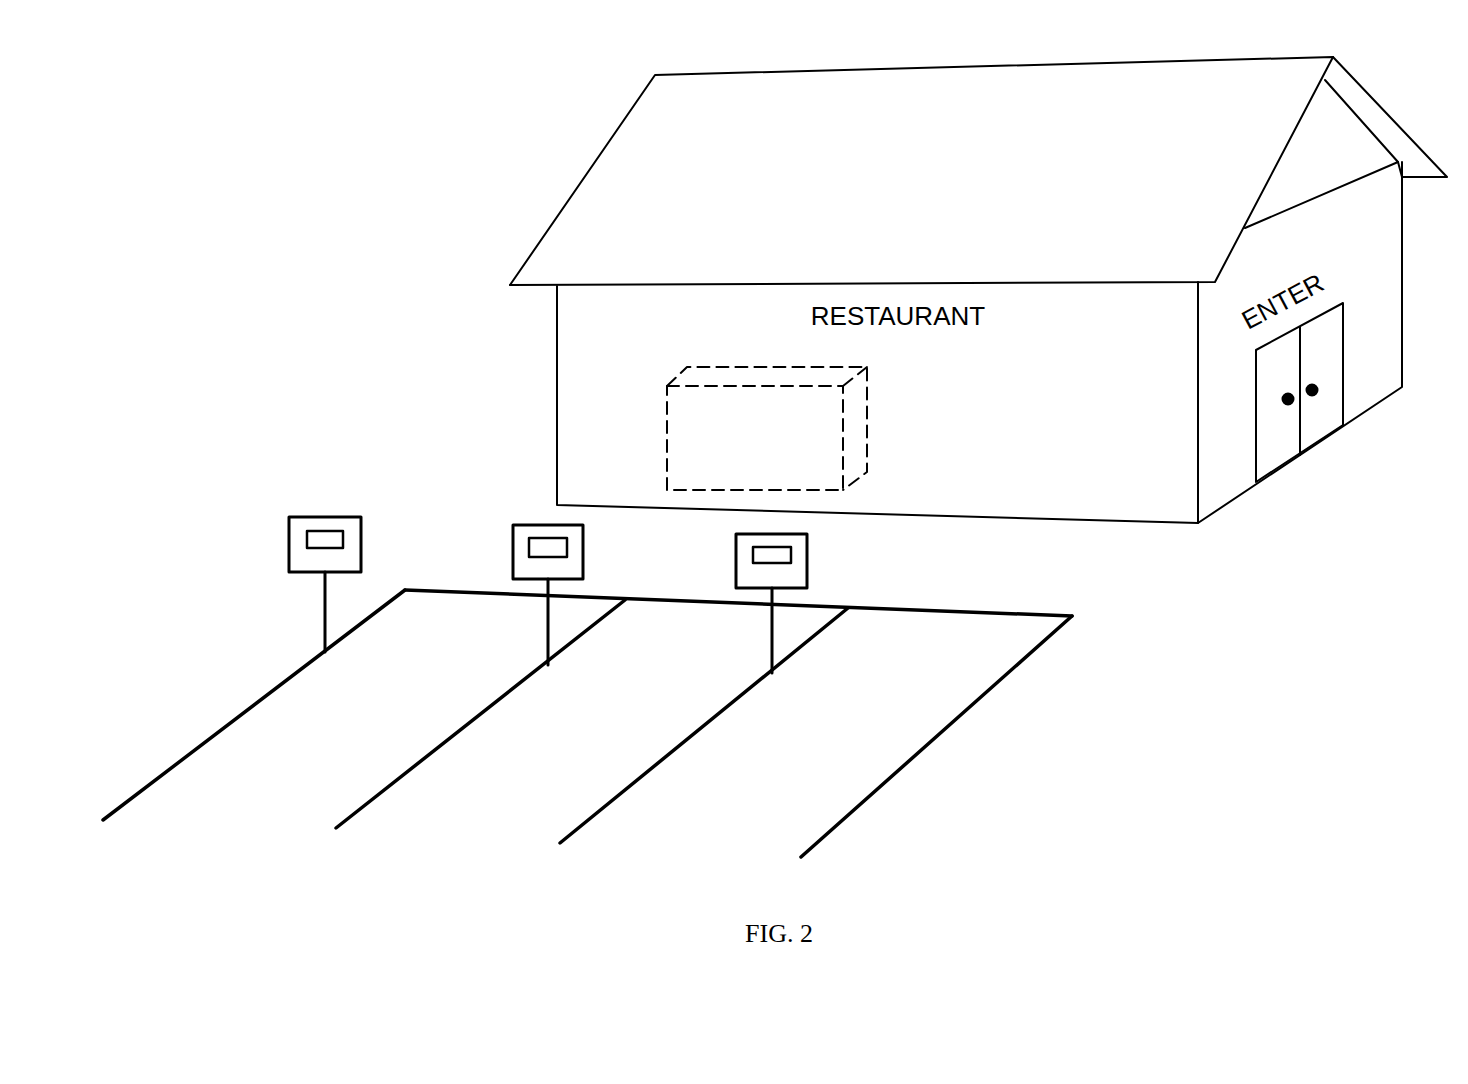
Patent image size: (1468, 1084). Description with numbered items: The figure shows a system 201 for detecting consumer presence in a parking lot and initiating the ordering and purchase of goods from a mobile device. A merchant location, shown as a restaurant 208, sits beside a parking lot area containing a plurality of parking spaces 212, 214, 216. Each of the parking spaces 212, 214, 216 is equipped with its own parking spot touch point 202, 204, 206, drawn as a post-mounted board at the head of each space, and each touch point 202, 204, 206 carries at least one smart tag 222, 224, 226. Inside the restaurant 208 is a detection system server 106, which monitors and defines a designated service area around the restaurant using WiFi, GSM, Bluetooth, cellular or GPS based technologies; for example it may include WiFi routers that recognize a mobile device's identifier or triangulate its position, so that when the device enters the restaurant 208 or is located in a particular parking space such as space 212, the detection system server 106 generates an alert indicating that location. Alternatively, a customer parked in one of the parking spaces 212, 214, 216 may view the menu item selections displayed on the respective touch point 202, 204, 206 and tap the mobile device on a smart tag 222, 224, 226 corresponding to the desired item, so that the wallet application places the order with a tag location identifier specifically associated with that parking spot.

The parking lot detection system environment 201 is at (318, 395).
The detection system server 106 is at (665, 437).
The parking spot touch point 202 is at (285, 563).
The parking spot touch point 204 is at (506, 574).
The parking spot touch point 206 is at (776, 603).
The smart tag 222 is at (318, 527).
The smart tag 224 is at (547, 537).
The smart tag 226 is at (793, 553).
The restaurant 208 is at (1237, 503).
The parking space 212 is at (345, 700).
The parking space 214 is at (537, 775).
The parking space 216 is at (927, 692).